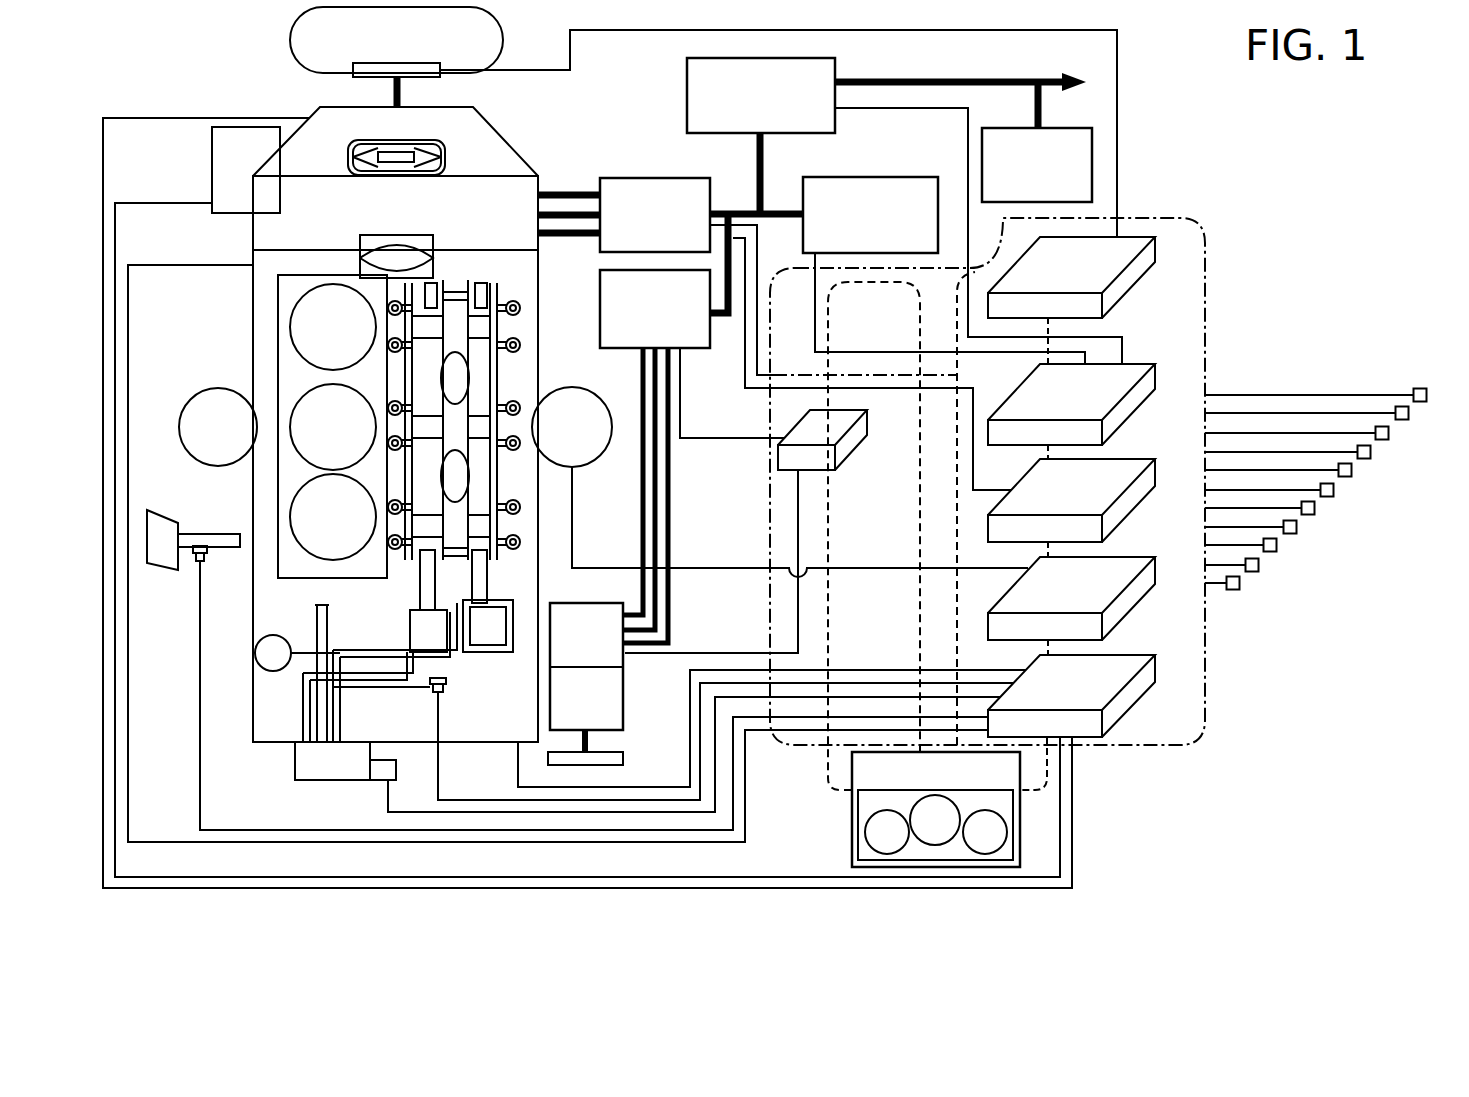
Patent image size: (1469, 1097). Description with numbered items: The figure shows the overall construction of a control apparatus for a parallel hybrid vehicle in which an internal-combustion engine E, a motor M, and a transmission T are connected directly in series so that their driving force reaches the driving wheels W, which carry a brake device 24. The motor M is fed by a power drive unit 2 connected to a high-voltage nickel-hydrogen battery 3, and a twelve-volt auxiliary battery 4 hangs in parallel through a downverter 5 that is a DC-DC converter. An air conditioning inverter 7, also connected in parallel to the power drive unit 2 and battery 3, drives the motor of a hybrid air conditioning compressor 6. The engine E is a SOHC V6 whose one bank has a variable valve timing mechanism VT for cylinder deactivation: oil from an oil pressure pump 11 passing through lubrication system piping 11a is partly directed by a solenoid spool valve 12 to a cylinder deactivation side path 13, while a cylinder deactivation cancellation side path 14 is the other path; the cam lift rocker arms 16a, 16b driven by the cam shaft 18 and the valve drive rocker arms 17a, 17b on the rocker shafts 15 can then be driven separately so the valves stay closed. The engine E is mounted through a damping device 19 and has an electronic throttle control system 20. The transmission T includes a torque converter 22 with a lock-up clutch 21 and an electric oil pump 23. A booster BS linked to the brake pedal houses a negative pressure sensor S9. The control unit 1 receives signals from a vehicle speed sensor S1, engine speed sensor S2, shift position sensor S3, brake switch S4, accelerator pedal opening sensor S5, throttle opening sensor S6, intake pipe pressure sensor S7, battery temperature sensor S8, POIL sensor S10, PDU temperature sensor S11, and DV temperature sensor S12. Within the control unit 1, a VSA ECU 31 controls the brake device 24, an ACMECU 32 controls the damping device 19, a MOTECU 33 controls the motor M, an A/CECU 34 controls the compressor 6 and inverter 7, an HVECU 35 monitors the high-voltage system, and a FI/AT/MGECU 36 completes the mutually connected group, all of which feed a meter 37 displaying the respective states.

The control unit 1 is at (1193, 218).
The power drive unit 2 is at (655, 178).
The nickel-hydrogen battery 3 is at (895, 177).
The auxiliary battery 4 is at (1070, 128).
The downverter 5 is at (687, 82).
The hybrid air conditioning compressor 6 is at (595, 603).
The air conditioning inverter 7 is at (695, 348).
The oil pressure pump 11 is at (273, 671).
The lubrication system piping 11a is at (327, 608).
The spool valve 12 is at (295, 762).
The cylinder deactivation side path 13 is at (513, 640).
The cylinder deactivation cancellation side path 14 is at (425, 676).
The rocker shaft 15 is at (432, 613).
The cam lift rocker arm 16a is at (400, 327).
The cam lift rocker arm 16b is at (505, 330).
The valve drive rocker arm 17a is at (388, 305).
The valve drive rocker arm 17b is at (520, 306).
The cam shaft 18 is at (462, 282).
The damping device 19 is at (218, 466).
The electronic throttle control system 20 is at (360, 240).
The lock-up clutch 21 is at (348, 176).
The torque converter 22 is at (452, 130).
The electric oil pump 23 is at (212, 160).
The brake device 24 is at (353, 68).
The VSA ECU 31 is at (1105, 237).
The ACMECU 32 is at (1130, 557).
The MOTECU 33 is at (1125, 459).
The A/CECU 34 is at (867, 425).
The HVECU 35 is at (1125, 364).
The FI/AT/MGECU 36 is at (1130, 655).
The meter 37 is at (852, 842).
The driving wheel W is at (292, 32).
The transmission T is at (493, 128).
The motor M is at (518, 189).
The internal-combustion engine E is at (253, 320).
The variable valve timing mechanism VT is at (507, 283).
The booster BS is at (160, 512).
The vehicle speed sensor S1 is at (1420, 389).
The engine speed sensor S2 is at (1396, 408).
The shift position sensor S3 is at (1382, 440).
The brake switch S4 is at (1364, 459).
The accelerator pedal opening sensor S5 is at (1345, 477).
The throttle opening sensor S6 is at (1327, 497).
The intake pipe pressure sensor S7 is at (1308, 515).
The battery temperature sensor S8 is at (1290, 534).
The master power internal negative pressure sensor S9 is at (196, 566).
The POIL sensor S10 is at (445, 695).
The PDU temperature sensor S11 is at (1270, 552).
The DV temperature sensor S12 is at (1252, 572).